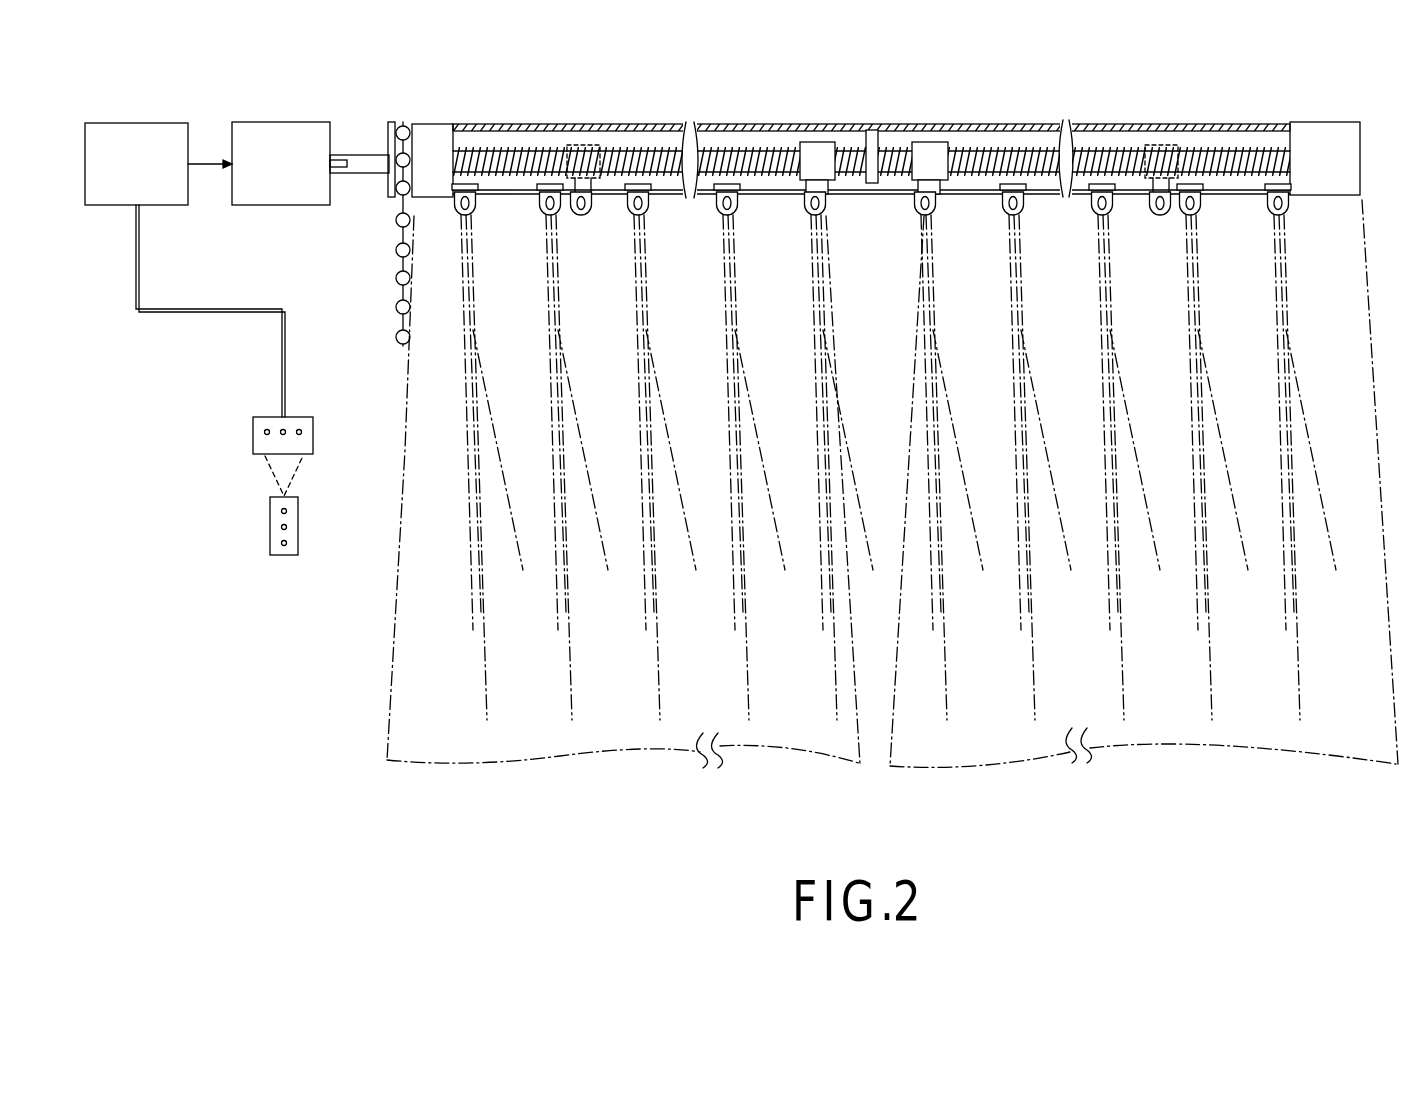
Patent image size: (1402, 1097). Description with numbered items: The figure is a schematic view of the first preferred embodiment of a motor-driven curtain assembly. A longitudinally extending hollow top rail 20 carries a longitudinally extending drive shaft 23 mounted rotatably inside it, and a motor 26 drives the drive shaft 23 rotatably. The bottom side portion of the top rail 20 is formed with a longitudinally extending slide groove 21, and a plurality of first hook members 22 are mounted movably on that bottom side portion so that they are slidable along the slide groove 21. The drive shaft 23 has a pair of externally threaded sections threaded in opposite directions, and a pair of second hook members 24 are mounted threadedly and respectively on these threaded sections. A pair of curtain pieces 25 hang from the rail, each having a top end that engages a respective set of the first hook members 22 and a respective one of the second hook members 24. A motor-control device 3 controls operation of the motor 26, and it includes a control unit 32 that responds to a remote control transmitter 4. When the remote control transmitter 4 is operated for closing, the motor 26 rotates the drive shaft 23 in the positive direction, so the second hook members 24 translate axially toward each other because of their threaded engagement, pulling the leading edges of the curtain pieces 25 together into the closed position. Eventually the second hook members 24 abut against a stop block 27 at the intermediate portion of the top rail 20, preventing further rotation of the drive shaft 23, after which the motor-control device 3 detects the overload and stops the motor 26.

The motor-control device 3 is at (118, 123).
The motor 26 is at (250, 123).
The top rail 20 is at (886, 157).
The slide groove 21 is at (1242, 191).
The first hook members 22 is at (1116, 206).
The drive shaft 23 is at (731, 150).
The second hook members 24 is at (584, 145).
The curtain pieces 25 is at (408, 658).
The stop block 27 is at (866, 128).
The control unit 32 is at (253, 432).
The remote control transmitter 4 is at (270, 537).